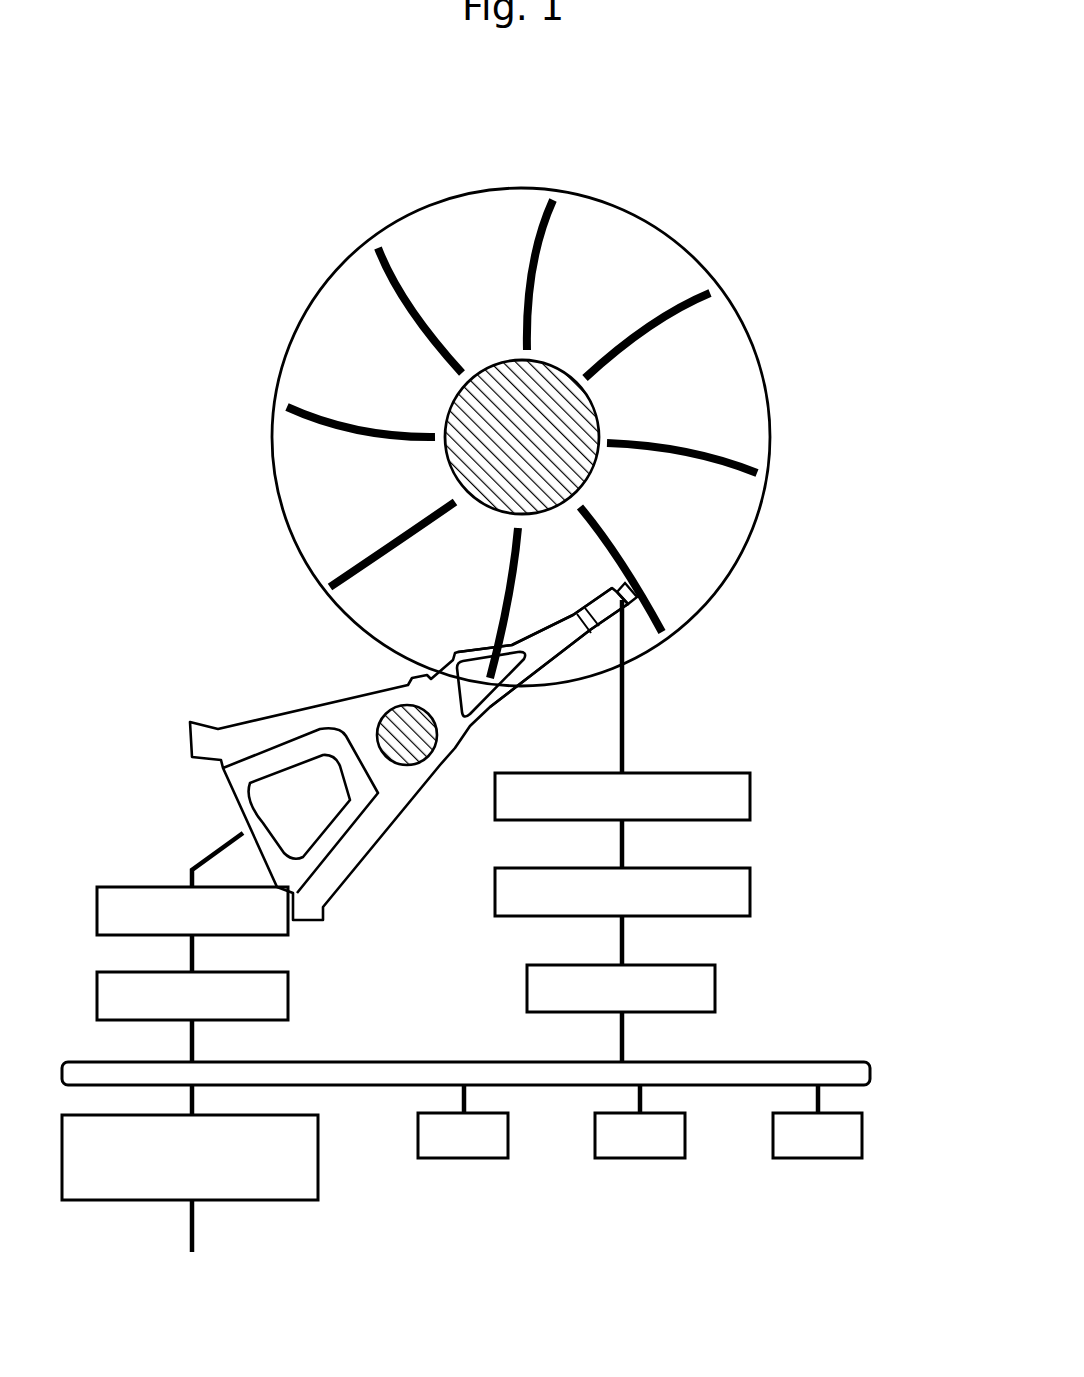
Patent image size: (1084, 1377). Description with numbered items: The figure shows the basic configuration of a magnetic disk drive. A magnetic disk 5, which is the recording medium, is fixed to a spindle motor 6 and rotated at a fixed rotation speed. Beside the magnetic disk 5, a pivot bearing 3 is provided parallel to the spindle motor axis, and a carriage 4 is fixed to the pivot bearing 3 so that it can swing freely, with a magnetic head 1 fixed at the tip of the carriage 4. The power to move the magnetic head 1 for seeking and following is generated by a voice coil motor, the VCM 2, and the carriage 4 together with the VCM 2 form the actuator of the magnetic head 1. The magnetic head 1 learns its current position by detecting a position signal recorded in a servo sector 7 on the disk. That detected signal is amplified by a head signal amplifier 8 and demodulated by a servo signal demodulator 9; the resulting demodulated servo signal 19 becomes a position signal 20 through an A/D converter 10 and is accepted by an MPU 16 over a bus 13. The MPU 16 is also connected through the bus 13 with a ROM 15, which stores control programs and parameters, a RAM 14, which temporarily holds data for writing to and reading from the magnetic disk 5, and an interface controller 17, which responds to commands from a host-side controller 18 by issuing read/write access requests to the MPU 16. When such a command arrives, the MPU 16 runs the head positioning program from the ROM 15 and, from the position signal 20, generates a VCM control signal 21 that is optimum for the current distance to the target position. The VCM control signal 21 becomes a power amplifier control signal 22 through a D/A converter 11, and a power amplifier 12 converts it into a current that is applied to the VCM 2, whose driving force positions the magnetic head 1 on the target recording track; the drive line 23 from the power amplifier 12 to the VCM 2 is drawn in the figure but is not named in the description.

The magnetic head 1 is at (620, 588).
The voice coil motor (VCM) 2 is at (270, 738).
The pivot bearing 3 is at (380, 706).
The carriage 4 is at (466, 730).
The magnetic disk 5 is at (768, 393).
The spindle motor 6 is at (443, 408).
The servo sector 7 is at (700, 457).
The head signal amplifier 8 is at (752, 795).
The servo signal demodulator 9 is at (752, 893).
The A/D converter 10 is at (717, 987).
The D/A converter 11 is at (290, 990).
The power amplifier 12 is at (103, 886).
The bus 13 is at (872, 1070).
The RAM 14 is at (863, 1142).
The ROM 15 is at (685, 1142).
The MPU 16 is at (510, 1142).
The interface controller 17 is at (320, 1147).
The host-side controller 18 is at (330, 1246).
The demodulated servo signal 19 is at (626, 943).
The position signal 20 is at (626, 1038).
The VCM control signal 21 is at (197, 1041).
The power amplifier control signal 22 is at (197, 953).
The actuator drive line 23 is at (190, 870).